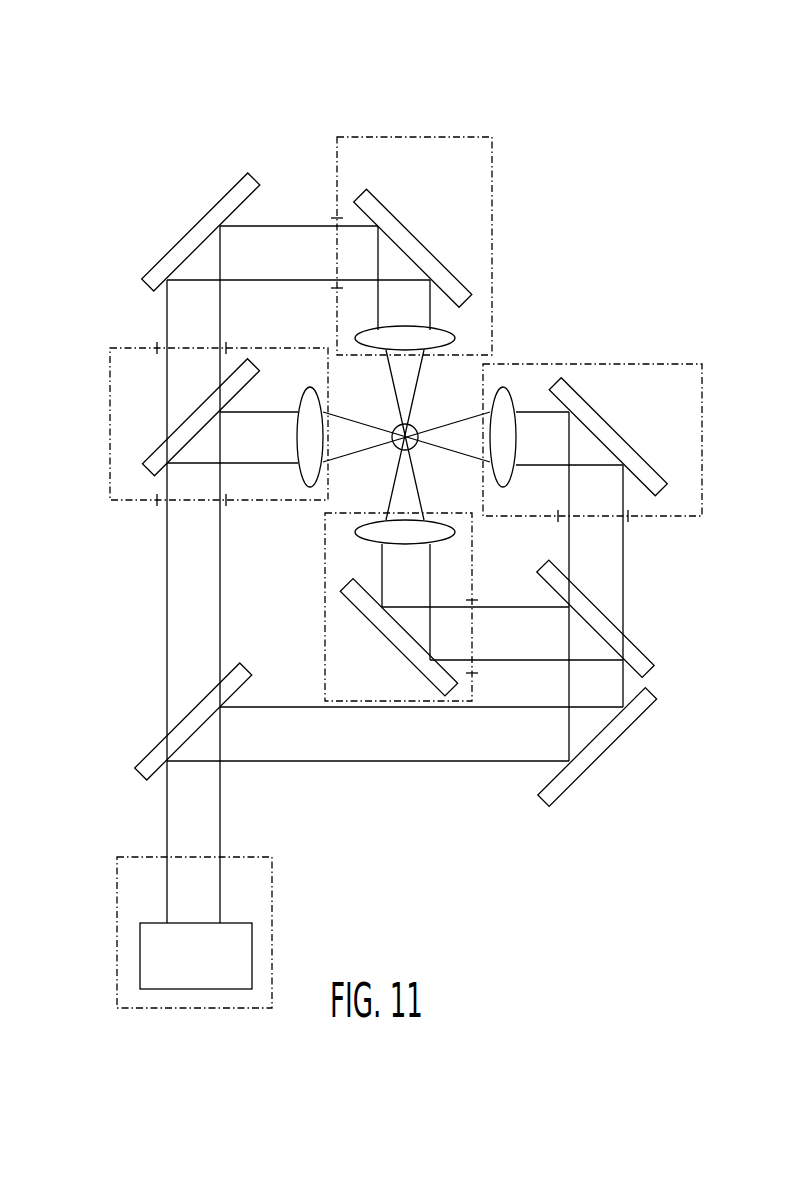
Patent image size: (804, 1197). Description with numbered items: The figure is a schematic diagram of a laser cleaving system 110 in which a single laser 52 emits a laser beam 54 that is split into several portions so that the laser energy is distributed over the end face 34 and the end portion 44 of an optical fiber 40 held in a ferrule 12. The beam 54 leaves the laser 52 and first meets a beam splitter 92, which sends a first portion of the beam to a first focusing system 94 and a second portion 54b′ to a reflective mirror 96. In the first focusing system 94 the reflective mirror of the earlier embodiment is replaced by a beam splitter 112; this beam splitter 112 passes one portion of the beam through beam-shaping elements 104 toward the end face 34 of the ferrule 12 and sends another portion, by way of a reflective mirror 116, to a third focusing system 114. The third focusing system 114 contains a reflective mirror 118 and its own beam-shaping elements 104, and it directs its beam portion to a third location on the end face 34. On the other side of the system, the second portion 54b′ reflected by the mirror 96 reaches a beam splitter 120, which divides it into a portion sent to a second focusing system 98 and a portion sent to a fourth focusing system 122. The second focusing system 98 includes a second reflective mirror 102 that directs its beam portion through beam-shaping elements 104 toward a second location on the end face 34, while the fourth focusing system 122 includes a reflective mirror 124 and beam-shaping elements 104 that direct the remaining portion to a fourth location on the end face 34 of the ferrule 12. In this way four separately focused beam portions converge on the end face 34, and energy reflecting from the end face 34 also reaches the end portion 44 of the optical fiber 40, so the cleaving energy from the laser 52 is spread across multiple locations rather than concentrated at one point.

The laser cleaving system 110 is at (628, 134).
The third focusing system 114 is at (496, 168).
The reflective mirror 118 is at (452, 272).
The beam-shaping elements 104 is at (455, 338).
The second focusing system 98 is at (673, 362).
The second reflective mirror 102 is at (667, 482).
The first focusing system 94 is at (128, 345).
The beam splitter 112 is at (158, 448).
The reflective mirror 116 is at (158, 265).
The laser beam 54 is at (165, 820).
The second portion of the laser beam 54b′ is at (323, 763).
The optical fiber 40 is at (433, 435).
The end portion 44 is at (426, 459).
The end face 34 is at (401, 444).
The ferrule 12 is at (421, 446).
The reflective mirror 124 is at (360, 608).
The fourth focusing system 122 is at (325, 675).
The beam splitter 120 is at (648, 658).
The reflective mirror 96 is at (605, 753).
The beam splitter 92 is at (143, 763).
The laser 52 is at (137, 943).